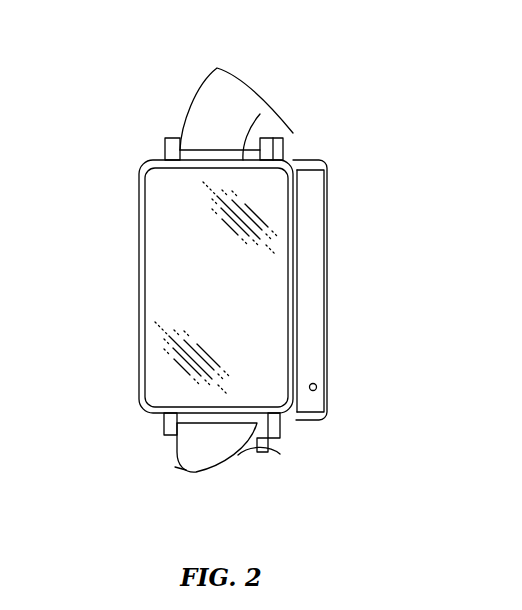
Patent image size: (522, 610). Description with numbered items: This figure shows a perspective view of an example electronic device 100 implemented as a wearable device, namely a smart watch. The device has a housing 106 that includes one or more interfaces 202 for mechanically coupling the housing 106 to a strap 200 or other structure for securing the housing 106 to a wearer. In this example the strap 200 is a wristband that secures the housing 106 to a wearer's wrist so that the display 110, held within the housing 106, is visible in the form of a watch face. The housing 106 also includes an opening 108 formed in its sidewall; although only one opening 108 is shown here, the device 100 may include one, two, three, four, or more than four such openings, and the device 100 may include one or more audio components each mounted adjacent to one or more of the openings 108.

The electronic device 100 is at (150, 84).
The housing 106 is at (152, 414).
The opening 108 is at (319, 387).
The display 110 is at (155, 220).
The strap 200 is at (223, 100).
The interfaces 202 is at (260, 114).